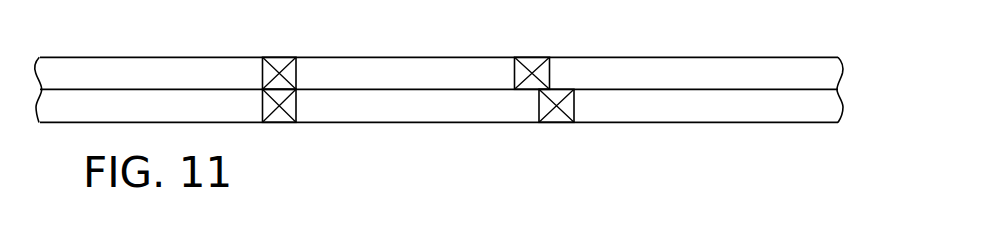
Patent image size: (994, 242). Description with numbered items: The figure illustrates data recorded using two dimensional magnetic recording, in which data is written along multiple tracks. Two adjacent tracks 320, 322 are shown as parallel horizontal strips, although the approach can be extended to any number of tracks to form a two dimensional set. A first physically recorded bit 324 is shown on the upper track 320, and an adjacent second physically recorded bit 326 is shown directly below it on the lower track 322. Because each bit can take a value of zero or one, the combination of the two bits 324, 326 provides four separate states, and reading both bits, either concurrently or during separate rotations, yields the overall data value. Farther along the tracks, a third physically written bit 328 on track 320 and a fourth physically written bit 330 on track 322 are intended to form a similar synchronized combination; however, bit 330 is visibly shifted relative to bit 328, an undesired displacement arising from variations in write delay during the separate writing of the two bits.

The track 320 is at (733, 57).
The track 322 is at (733, 122).
The first physically recorded bit 324 is at (278, 57).
The second physically recorded bit 326 is at (278, 122).
The third physically written bit 328 is at (531, 57).
The fourth physically written bit 330 is at (556, 121).